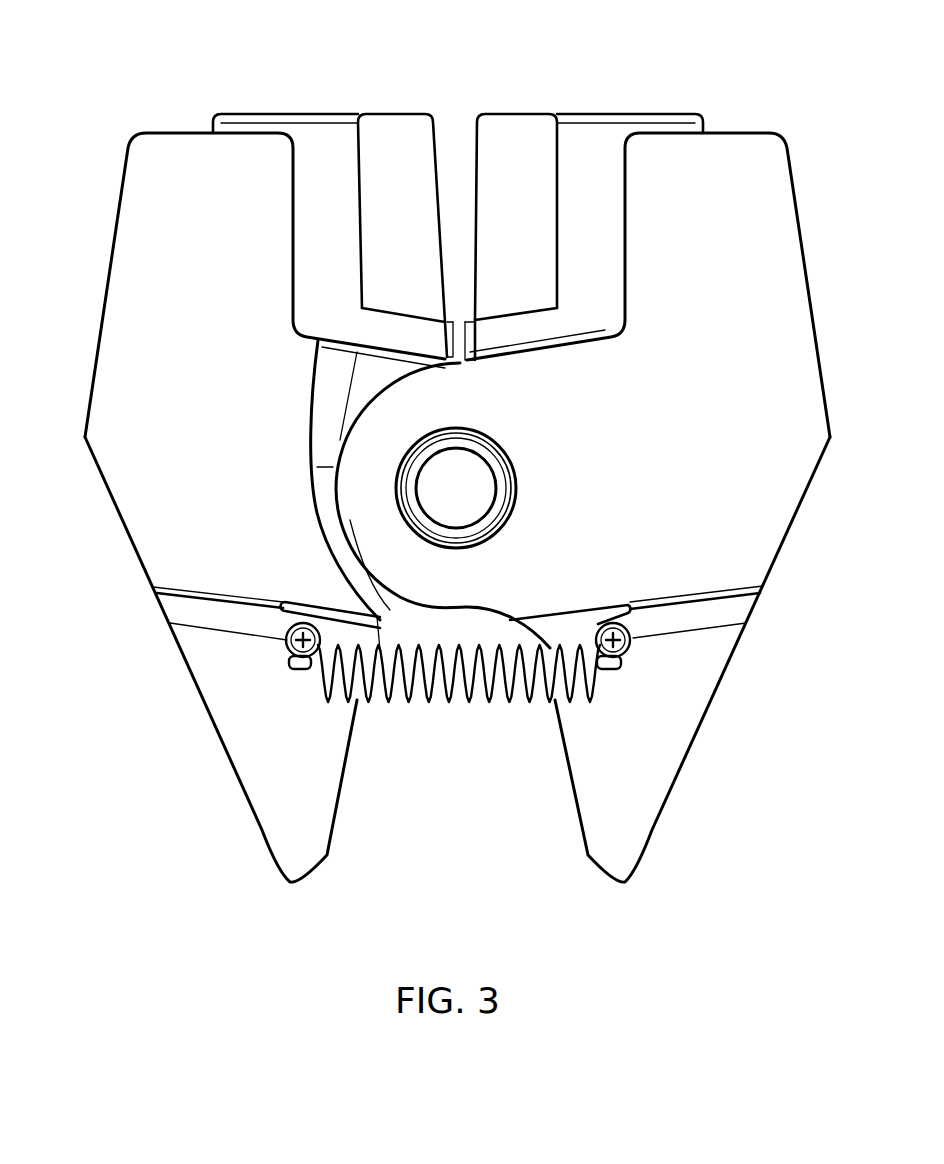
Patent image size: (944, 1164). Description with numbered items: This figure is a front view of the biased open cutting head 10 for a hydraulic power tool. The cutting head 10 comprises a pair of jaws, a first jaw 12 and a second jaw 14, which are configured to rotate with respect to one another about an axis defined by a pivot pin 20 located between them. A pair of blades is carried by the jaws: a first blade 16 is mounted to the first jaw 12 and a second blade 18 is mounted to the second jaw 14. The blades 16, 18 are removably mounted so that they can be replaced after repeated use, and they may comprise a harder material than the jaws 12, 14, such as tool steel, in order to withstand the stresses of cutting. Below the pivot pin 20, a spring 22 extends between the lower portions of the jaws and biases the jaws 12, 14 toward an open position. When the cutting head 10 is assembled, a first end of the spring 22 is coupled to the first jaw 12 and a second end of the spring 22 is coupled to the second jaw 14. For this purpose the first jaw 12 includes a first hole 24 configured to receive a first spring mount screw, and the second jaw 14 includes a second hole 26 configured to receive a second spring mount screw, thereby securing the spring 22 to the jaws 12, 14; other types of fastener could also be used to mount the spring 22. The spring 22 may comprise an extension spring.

The biased open cutting head 10 is at (106, 90).
The first jaw 12 is at (132, 243).
The second jaw 14 is at (778, 300).
The first blade 16 is at (306, 113).
The second blade 18 is at (617, 113).
The pivot pin 20 is at (398, 480).
The spring 22 is at (318, 692).
The first hole 24 is at (290, 650).
The second hole 26 is at (632, 640).